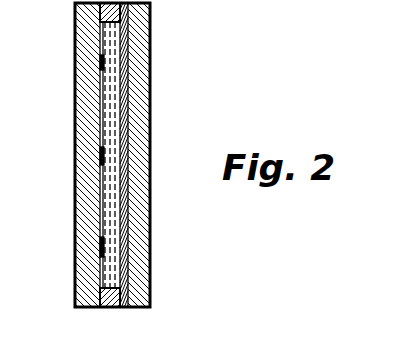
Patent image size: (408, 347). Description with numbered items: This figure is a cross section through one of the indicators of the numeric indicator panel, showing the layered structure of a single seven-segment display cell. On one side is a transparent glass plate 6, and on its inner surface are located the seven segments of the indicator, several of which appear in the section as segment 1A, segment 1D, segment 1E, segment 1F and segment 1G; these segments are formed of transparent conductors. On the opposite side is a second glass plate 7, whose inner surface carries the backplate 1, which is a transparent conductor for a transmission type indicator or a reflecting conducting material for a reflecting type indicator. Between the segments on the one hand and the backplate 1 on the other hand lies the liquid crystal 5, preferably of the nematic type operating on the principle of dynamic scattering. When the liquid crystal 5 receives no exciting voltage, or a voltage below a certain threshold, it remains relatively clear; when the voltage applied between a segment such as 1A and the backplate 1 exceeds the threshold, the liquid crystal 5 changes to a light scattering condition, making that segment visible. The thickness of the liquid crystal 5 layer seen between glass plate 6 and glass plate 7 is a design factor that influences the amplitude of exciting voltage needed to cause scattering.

The backplate 1 is at (137, 59).
The segment 1A is at (100, 63).
The segment 1D is at (100, 245).
The segment 1E is at (97, 208).
The segment 1F is at (97, 110).
The segment 1G is at (100, 160).
The liquid crystal 5 is at (108, 272).
The glass plate 6 is at (76, 22).
The glass plate 7 is at (149, 17).